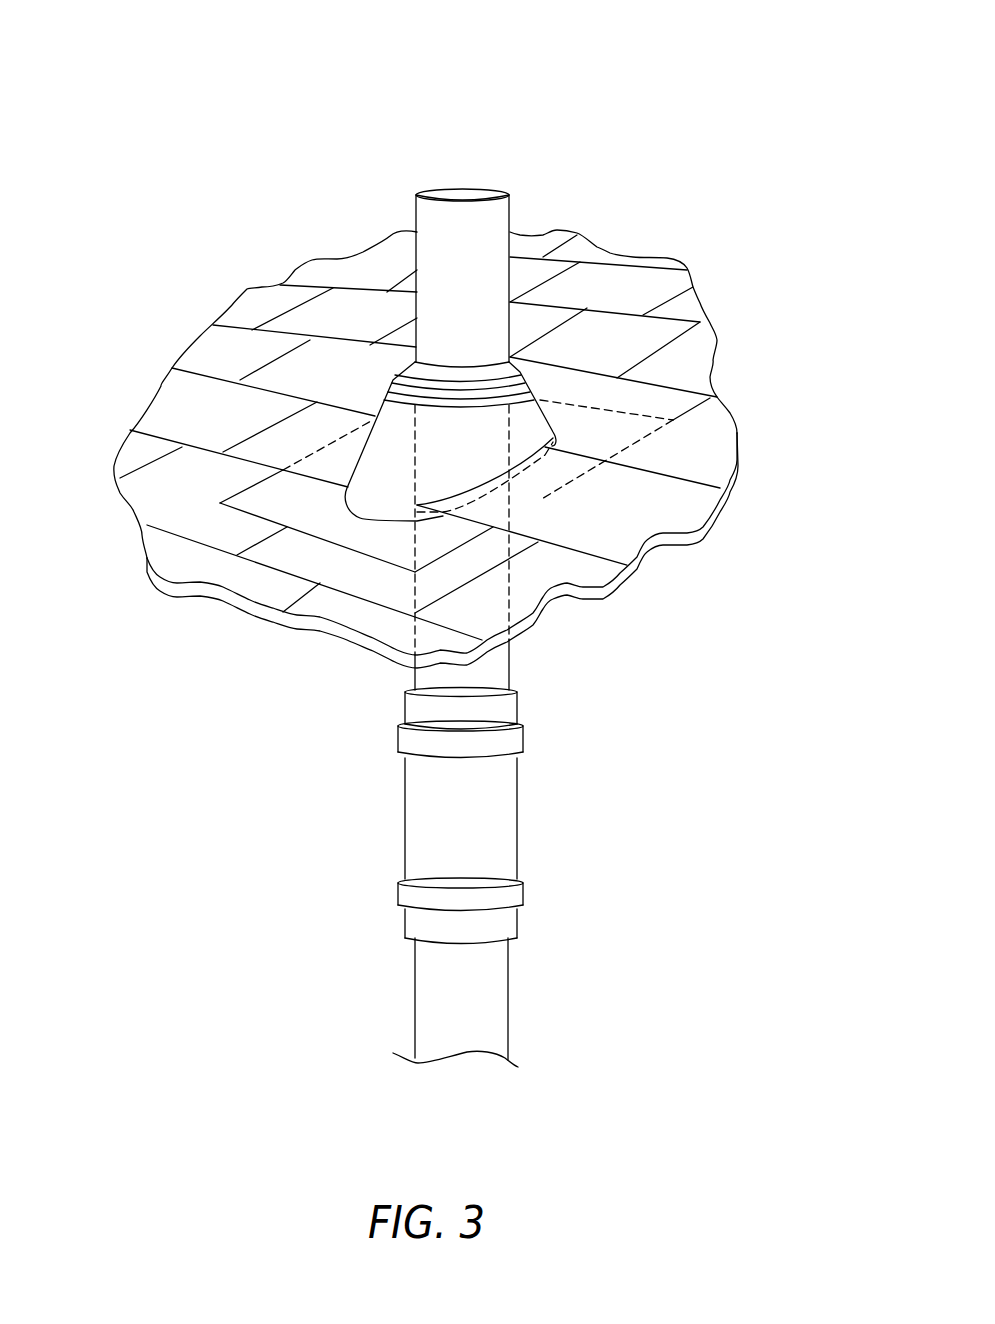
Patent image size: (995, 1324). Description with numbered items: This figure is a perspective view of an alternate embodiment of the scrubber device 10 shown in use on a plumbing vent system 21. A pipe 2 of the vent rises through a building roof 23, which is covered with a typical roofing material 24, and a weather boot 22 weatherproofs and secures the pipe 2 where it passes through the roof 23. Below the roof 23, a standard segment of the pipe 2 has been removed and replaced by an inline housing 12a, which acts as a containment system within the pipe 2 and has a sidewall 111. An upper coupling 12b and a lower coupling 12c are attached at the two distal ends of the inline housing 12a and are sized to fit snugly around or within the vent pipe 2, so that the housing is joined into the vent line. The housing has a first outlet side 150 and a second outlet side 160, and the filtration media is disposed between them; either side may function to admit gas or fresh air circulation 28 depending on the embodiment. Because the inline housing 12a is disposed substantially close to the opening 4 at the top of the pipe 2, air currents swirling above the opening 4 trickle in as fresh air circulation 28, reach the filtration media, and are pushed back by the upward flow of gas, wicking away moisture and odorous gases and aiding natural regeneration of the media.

The scrubber device 10 is at (180, 138).
The pipe 2 is at (415, 258).
The opening 4 is at (463, 174).
The plumbing vent system 21 is at (522, 213).
The fresh air circulation 28 is at (497, 184).
The weather boot 22 is at (372, 469).
The roof 23 is at (282, 342).
The roofing material 24 is at (700, 447).
The second outlet side 160 is at (390, 713).
The coupling 12b is at (507, 713).
The inline housing 12a is at (507, 817).
The lower coupling 12c is at (507, 920).
The sidewall 111 is at (407, 813).
The first outlet side 150 is at (399, 946).